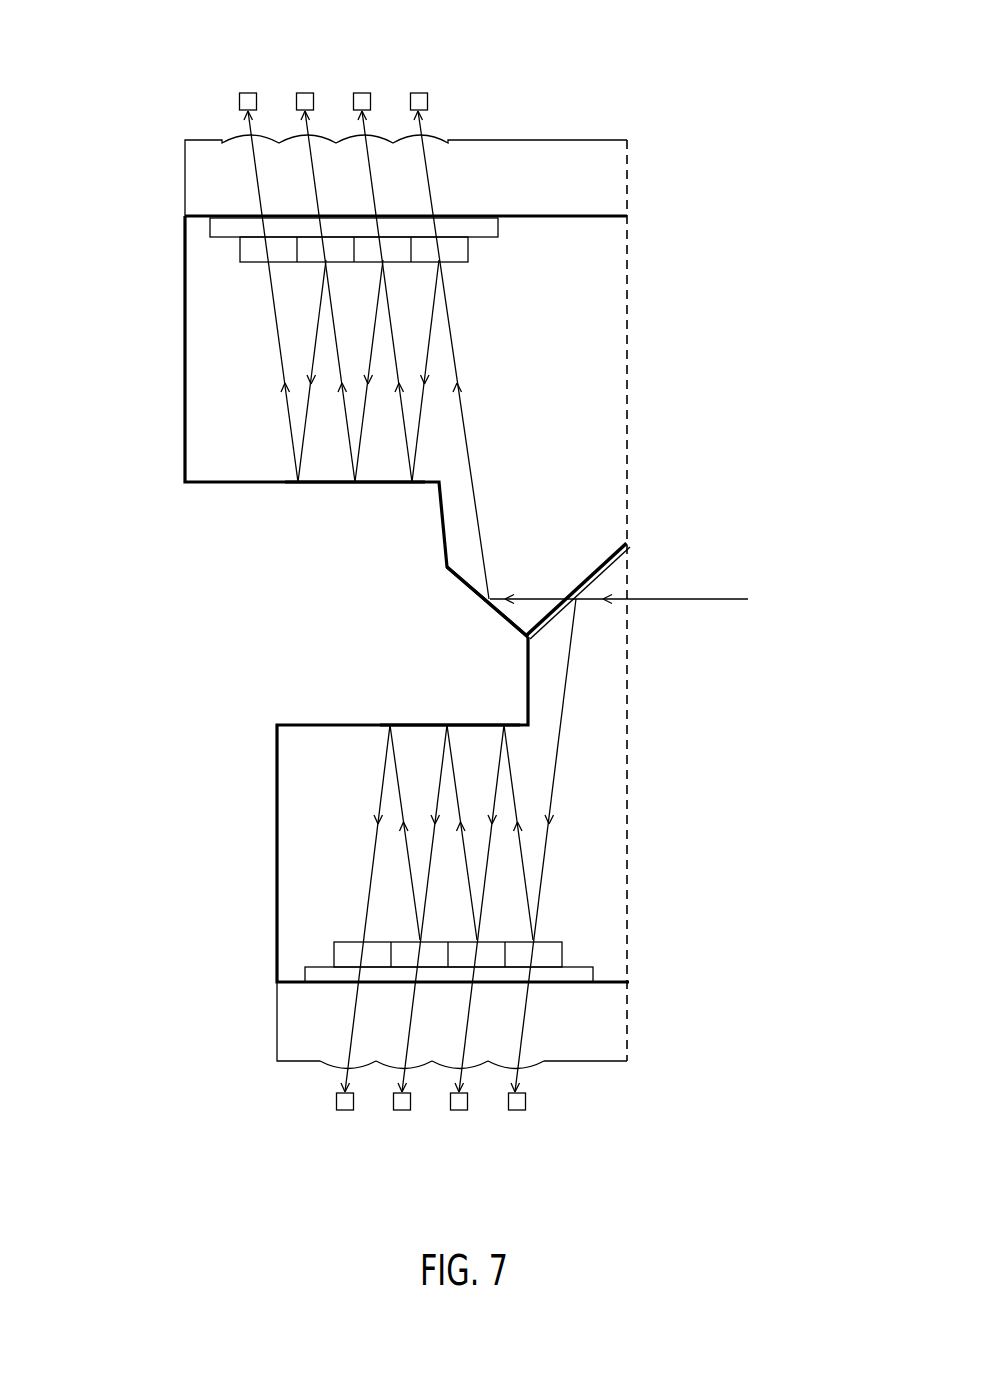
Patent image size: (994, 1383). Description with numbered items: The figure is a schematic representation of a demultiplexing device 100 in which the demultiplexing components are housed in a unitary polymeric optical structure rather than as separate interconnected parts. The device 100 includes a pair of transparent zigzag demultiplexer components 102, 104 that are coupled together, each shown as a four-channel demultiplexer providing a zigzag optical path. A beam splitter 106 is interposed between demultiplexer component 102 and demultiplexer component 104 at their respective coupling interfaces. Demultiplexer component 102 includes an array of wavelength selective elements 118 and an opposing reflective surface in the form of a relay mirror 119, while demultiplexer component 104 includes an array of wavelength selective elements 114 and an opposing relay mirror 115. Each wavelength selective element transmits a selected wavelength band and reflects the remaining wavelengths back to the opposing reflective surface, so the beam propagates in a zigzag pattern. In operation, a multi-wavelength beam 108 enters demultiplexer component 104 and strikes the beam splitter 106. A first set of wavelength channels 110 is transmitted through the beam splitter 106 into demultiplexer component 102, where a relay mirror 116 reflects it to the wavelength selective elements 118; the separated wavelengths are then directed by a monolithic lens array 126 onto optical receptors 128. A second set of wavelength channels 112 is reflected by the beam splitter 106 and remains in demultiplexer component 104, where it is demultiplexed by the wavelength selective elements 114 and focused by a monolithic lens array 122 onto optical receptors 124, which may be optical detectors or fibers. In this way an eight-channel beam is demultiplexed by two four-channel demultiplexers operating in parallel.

The demultiplexing device 100 is at (685, 339).
The demultiplexer component 102 is at (185, 325).
The demultiplexer component 104 is at (277, 785).
The beam splitter 106 is at (610, 573).
The multi-wavelength beam 108 is at (690, 599).
The first set of wavelength channels 110 is at (465, 453).
The second set of wavelength channels 112 is at (558, 752).
The wavelength selective elements 114 is at (543, 957).
The relay mirror 115 is at (437, 727).
The relay mirror 116 is at (457, 573).
The wavelength selective elements 118 is at (337, 245).
The relay mirror 119 is at (334, 482).
The monolithic lens array 122 is at (280, 1030).
The optical receptor 124 is at (337, 1103).
The monolithic lens array 126 is at (541, 140).
The optical receptor 128 is at (238, 98).